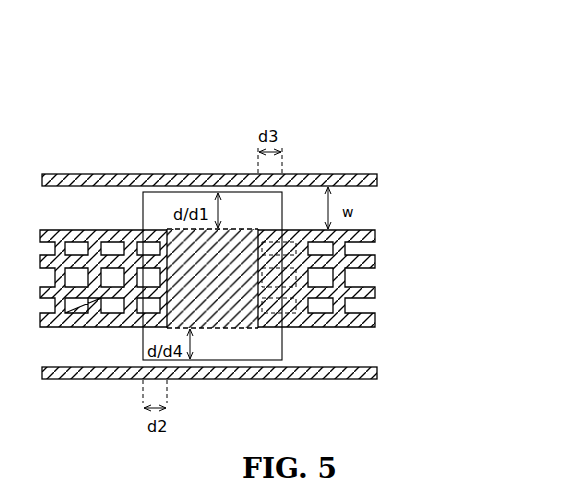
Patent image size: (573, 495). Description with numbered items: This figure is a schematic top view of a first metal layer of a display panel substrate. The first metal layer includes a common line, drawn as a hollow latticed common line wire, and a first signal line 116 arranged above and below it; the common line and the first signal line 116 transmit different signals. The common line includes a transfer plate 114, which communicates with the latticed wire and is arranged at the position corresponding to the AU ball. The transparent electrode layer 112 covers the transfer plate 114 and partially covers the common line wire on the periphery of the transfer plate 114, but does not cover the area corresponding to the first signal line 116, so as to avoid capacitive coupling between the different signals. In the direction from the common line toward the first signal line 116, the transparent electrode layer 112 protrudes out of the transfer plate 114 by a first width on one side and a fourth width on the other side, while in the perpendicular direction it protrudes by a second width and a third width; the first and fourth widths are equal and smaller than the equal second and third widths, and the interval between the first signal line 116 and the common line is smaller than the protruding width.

The transparent electrode layer 112 is at (200, 191).
The transfer plate 114 is at (228, 292).
The first signal line 116 is at (377, 183).